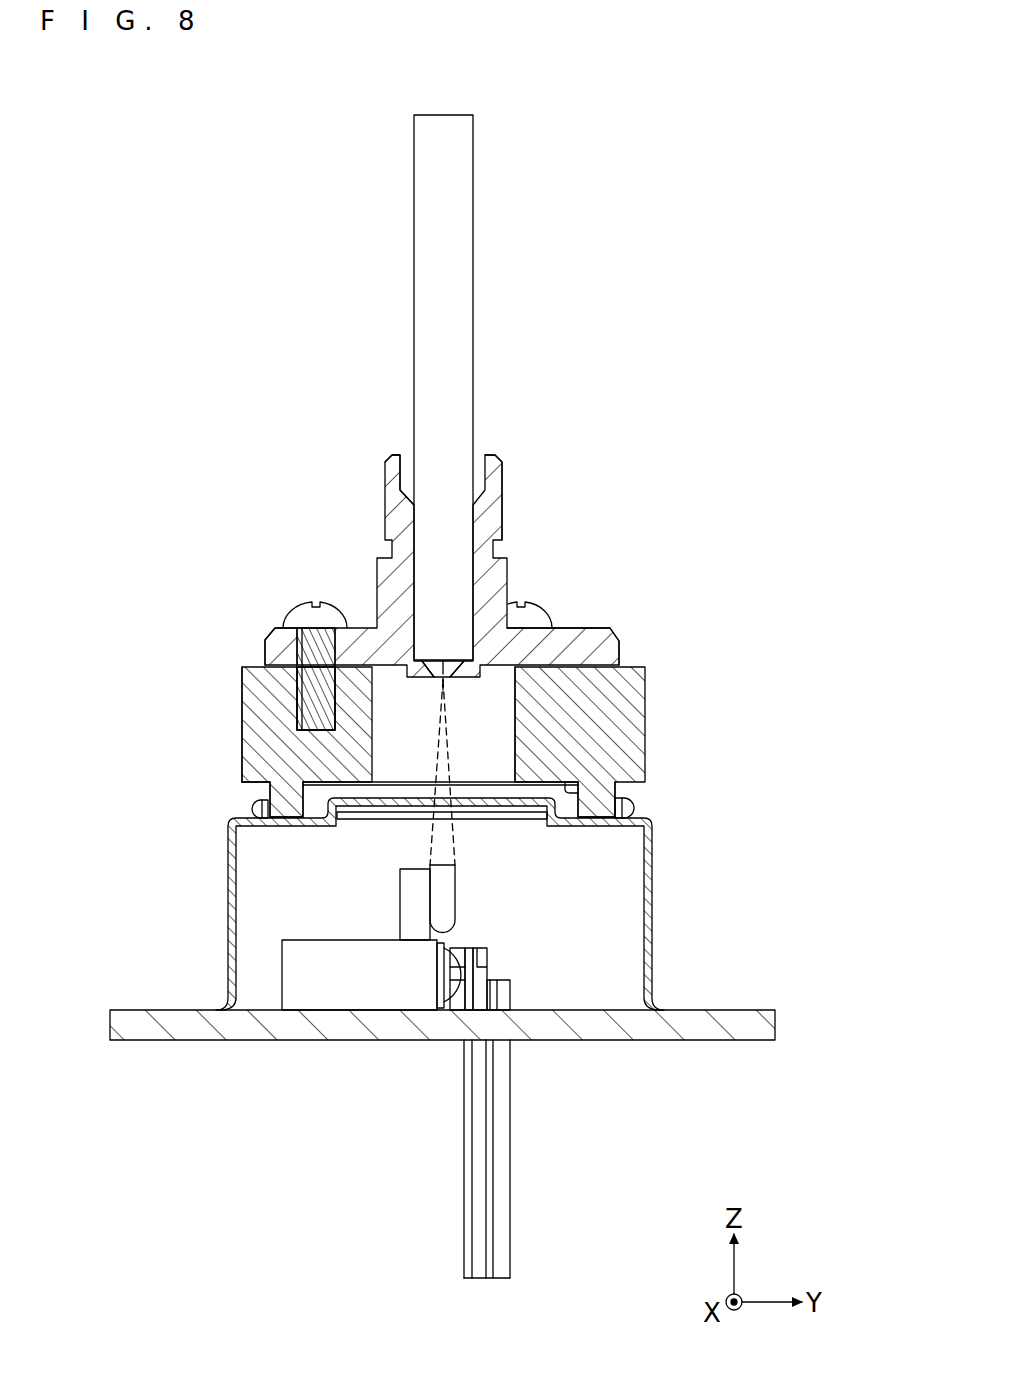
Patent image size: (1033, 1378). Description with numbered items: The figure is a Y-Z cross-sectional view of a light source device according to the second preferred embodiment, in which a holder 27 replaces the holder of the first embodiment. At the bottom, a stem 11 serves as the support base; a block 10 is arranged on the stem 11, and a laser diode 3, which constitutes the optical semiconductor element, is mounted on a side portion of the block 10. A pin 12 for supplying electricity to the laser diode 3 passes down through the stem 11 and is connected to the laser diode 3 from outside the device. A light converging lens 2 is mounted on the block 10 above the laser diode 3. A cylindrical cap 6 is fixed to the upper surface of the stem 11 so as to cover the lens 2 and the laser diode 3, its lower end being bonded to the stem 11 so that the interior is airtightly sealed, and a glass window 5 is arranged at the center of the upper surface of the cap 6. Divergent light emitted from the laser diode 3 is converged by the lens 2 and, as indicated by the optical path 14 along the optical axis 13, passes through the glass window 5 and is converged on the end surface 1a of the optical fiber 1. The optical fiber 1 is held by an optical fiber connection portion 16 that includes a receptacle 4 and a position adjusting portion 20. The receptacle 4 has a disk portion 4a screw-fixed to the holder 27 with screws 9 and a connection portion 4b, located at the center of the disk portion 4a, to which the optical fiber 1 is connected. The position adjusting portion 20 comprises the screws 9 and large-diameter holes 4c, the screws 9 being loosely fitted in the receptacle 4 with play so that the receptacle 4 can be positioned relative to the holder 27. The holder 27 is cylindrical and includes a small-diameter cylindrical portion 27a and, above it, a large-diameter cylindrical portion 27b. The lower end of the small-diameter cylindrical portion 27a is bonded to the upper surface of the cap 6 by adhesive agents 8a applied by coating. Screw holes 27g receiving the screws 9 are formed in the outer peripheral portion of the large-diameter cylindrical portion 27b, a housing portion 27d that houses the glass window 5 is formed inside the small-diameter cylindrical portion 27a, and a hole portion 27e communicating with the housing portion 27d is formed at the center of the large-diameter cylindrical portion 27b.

The optical fiber 1 is at (459, 396).
The end surface 1a is at (458, 655).
The light converging lens 2 is at (448, 902).
The laser diode 3 is at (451, 955).
The receptacle 4 is at (416, 566).
The disk portion 4a is at (586, 628).
The connection portion 4b is at (495, 510).
The large-diameter hole 4c is at (270, 645).
The glass window 5 is at (480, 812).
The cap 6 is at (229, 912).
The adhesive agent 8a is at (252, 805).
The screw 9 is at (300, 612).
The block 10 is at (343, 990).
The stem 11 is at (760, 1022).
The pin 12 is at (505, 1198).
The optical axis 13 is at (443, 440).
The optical path 14 is at (430, 845).
The optical fiber connection portion 16 is at (385, 592).
The position adjusting portion 20 is at (385, 592).
The holder 27 is at (435, 708).
The small-diameter cylindrical portion 27a is at (270, 793).
The large-diameter cylindrical portion 27b is at (248, 722).
The housing portion 27d is at (580, 793).
The hole portion 27e is at (503, 695).
The screw hole 27g is at (305, 690).